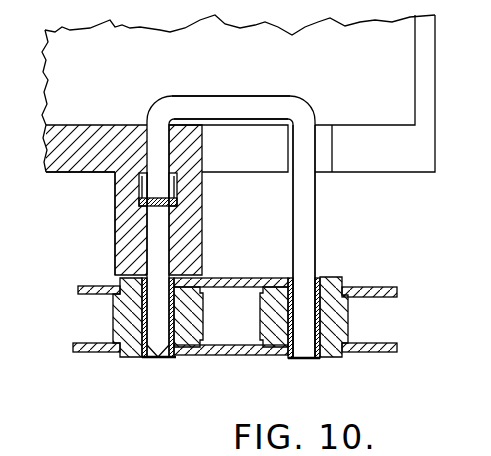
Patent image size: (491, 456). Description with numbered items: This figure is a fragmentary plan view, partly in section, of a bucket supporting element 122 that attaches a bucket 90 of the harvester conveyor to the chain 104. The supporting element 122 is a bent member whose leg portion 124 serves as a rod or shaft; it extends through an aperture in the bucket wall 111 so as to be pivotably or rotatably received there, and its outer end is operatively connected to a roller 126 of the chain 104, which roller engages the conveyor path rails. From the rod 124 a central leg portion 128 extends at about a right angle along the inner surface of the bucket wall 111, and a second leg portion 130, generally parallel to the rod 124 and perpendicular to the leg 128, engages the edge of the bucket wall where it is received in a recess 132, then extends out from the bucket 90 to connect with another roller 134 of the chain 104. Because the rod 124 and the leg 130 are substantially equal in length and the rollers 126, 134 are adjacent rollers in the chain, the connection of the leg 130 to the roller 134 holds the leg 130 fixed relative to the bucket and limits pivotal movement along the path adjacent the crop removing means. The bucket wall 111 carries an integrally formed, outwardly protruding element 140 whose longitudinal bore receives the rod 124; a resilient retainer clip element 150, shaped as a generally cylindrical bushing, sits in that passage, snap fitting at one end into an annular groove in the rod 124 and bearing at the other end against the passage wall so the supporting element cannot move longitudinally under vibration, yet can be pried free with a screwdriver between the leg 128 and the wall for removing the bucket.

The bucket 90 is at (121, 61).
The bucket wall 111 is at (80, 125).
The first bucket supporting element 122 is at (264, 200).
The central leg portion 128 is at (229, 107).
The second leg portion 130 is at (305, 232).
The recess 132 is at (333, 153).
The protruding element 140 is at (190, 222).
The leg portion 124 is at (158, 242).
The retainer clip element 150 is at (142, 188).
The roller 126 is at (124, 319).
The roller 134 is at (332, 330).
The chain 104 is at (223, 357).